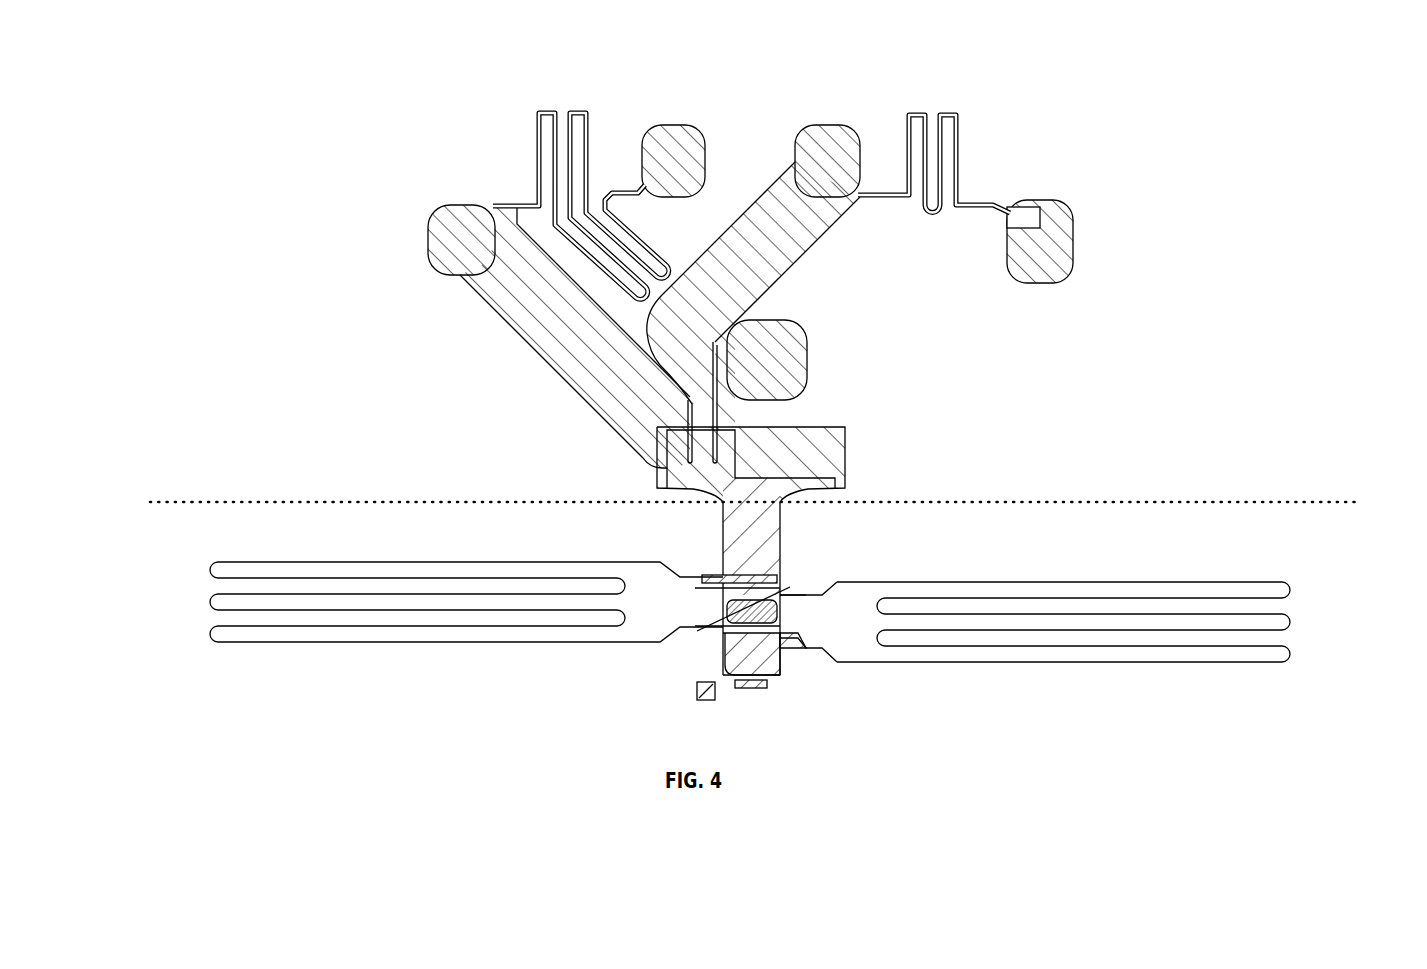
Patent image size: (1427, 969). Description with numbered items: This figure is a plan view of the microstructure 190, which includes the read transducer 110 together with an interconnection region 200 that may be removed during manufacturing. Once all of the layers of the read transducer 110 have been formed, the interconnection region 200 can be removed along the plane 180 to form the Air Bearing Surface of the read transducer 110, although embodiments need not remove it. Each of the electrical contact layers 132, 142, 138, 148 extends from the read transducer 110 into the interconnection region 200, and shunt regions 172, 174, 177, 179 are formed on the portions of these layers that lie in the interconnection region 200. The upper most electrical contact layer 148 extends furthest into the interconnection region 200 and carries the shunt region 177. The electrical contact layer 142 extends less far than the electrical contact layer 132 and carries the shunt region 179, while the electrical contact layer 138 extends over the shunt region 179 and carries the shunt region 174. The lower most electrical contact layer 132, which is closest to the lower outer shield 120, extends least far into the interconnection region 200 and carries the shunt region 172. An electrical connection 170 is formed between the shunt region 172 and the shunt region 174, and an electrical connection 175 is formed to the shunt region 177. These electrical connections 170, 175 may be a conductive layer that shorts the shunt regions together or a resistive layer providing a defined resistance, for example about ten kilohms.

The microstructure 190 is at (405, 76).
The read transducer 110 is at (950, 352).
The lower outer shield 120 is at (846, 460).
The plane 180 is at (282, 495).
The electrical contact layer 132 is at (777, 535).
The shunt region 172 is at (705, 580).
The shunt region 179 is at (782, 618).
The electrical contact layer 138 is at (722, 602).
The electrical contact layer 142 is at (790, 608).
The shunt region 174 is at (713, 626).
The electrical contact layer 148 is at (727, 678).
The shunt region 177 is at (793, 653).
The electrical connection 170 is at (168, 555).
The electrical connection 175 is at (1305, 575).
The interconnection region 200 is at (400, 694).